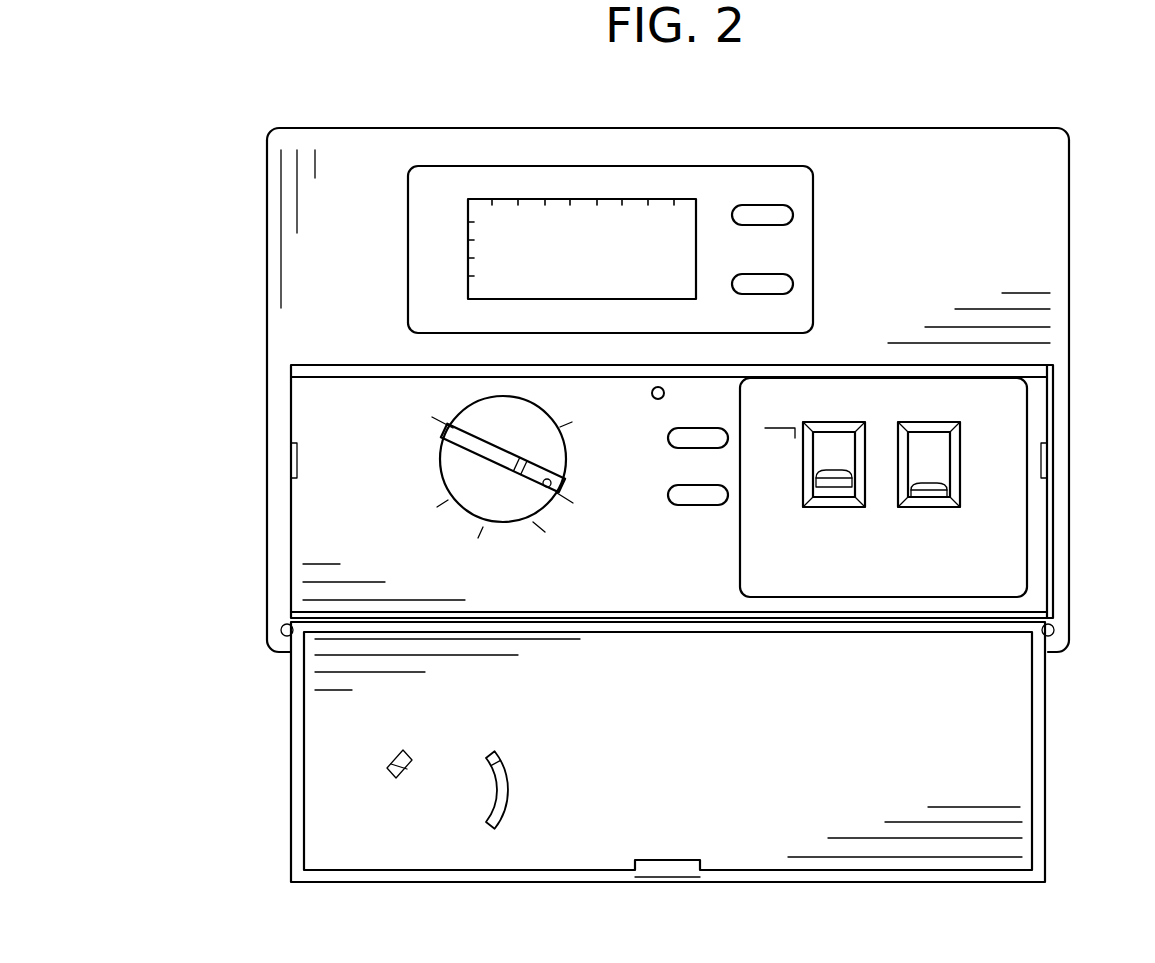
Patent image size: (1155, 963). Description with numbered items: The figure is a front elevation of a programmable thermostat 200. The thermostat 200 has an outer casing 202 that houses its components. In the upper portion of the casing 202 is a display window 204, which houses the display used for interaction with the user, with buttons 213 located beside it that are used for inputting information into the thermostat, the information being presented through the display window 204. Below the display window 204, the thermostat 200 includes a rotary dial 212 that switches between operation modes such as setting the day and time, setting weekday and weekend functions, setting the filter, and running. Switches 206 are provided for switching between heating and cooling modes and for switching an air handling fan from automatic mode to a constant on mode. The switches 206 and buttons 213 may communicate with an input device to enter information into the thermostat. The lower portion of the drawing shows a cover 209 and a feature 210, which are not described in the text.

The thermostat 200 is at (148, 122).
The outer casing 202 is at (1062, 193).
The display window 204 is at (482, 208).
The switches 206 is at (938, 508).
The cover 209 is at (1013, 712).
The cover feature 210 is at (510, 792).
The rotary dial 212 is at (530, 505).
The buttons 213 is at (736, 450).